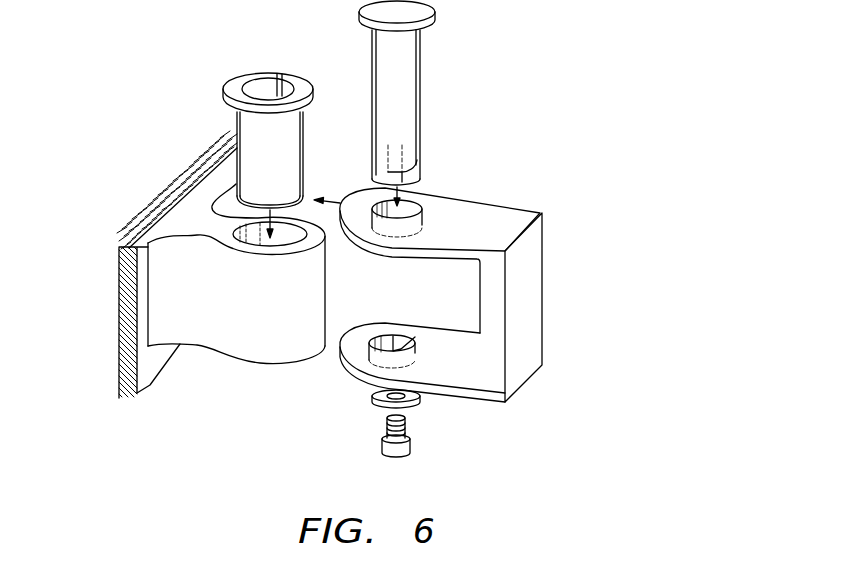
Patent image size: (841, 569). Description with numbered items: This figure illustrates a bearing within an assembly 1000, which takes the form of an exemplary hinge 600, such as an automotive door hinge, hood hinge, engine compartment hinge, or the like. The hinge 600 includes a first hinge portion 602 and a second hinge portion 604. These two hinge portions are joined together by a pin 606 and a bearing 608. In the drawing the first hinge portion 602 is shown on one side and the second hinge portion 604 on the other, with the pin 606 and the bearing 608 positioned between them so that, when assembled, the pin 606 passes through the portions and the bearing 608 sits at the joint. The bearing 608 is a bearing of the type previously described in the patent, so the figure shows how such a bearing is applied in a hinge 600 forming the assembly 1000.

The assembly 1000 is at (640, 40).
The hinge 600 is at (549, 96).
The first hinge portion 602 is at (152, 208).
The second hinge portion 604 is at (543, 248).
The pin 606 is at (411, 91).
The bearing 608 is at (237, 124).